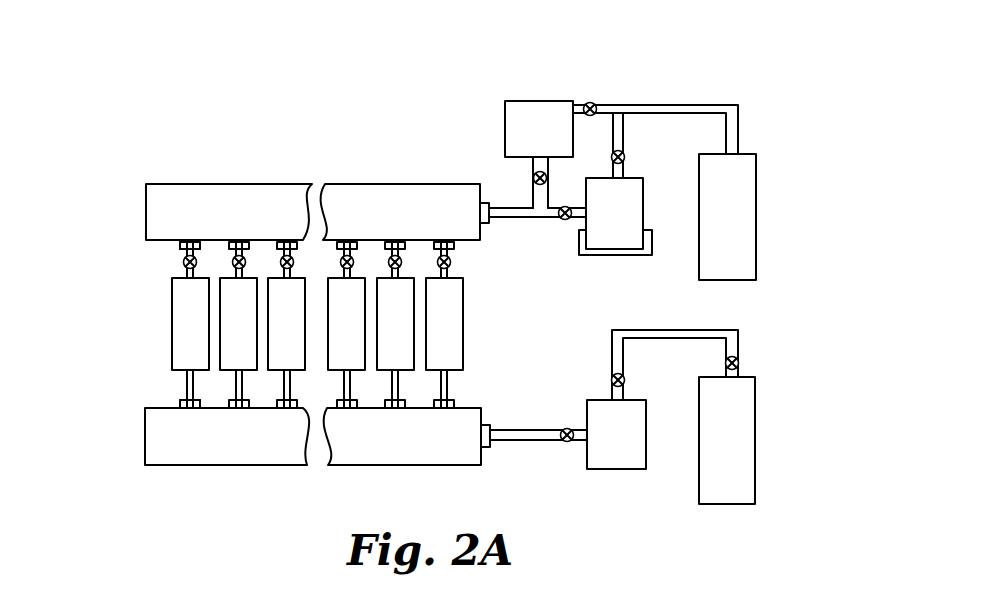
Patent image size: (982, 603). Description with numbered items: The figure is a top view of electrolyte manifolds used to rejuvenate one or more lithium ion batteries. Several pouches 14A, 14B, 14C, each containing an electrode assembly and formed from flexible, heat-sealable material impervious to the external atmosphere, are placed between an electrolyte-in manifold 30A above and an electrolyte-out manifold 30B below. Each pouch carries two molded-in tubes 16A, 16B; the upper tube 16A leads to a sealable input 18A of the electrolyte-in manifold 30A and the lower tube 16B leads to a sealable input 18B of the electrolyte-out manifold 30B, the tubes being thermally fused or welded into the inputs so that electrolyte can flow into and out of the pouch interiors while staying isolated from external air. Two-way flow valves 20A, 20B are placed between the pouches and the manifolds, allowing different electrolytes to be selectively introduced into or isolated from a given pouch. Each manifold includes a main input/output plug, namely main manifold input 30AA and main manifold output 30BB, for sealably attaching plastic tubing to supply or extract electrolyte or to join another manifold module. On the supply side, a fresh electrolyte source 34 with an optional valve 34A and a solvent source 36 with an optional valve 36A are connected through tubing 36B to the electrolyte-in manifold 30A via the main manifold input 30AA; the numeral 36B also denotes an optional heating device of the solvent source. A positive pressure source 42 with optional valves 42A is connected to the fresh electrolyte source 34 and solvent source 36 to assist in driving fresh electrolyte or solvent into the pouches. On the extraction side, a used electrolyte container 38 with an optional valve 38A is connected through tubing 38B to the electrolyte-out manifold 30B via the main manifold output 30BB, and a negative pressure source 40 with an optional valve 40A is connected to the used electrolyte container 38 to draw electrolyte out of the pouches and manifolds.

The pouch 14A is at (199, 293).
The pouch 14B is at (242, 293).
The pouch 14C is at (296, 293).
The molded-in tube 16A is at (182, 272).
The molded-in tube 16B is at (185, 383).
The sealable manifold input 18A is at (180, 247).
The sealable manifold input 18B is at (177, 402).
The two-way flow valve 20A is at (182, 260).
The second inlet valve 20B is at (232, 258).
The electrolyte-in manifold 30A is at (170, 190).
The main manifold input plug 30AA is at (490, 223).
The electrolyte-out manifold 30B is at (400, 450).
The main manifold output plug 30BB is at (490, 425).
The fresh electrolyte source 34 is at (533, 110).
The valve 34A is at (533, 178).
The solvent source 36 is at (622, 243).
The valve 36A is at (565, 220).
The tubing 36B is at (521, 217).
The used electrolyte container 38 is at (618, 458).
The valve 38A is at (567, 428).
The tubing 38B is at (518, 440).
The negative pressure source 40 is at (743, 440).
The valve 40A is at (618, 380).
The positive pressure source 42 is at (743, 217).
The valve 42A is at (621, 153).